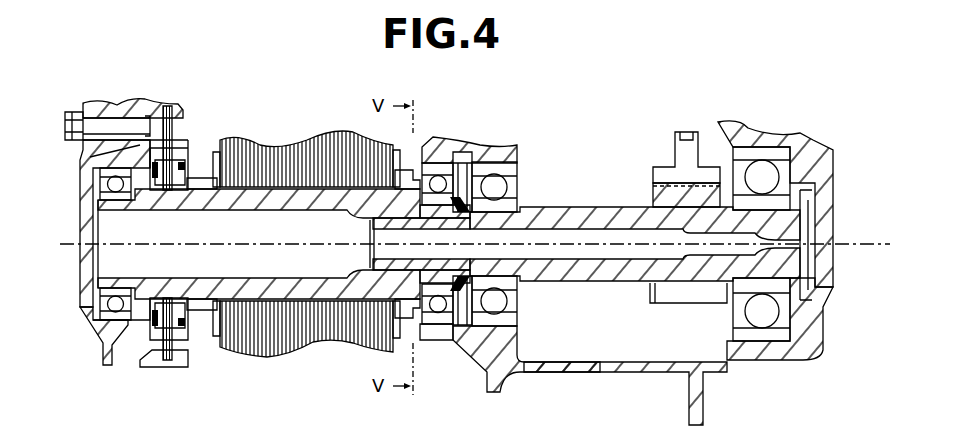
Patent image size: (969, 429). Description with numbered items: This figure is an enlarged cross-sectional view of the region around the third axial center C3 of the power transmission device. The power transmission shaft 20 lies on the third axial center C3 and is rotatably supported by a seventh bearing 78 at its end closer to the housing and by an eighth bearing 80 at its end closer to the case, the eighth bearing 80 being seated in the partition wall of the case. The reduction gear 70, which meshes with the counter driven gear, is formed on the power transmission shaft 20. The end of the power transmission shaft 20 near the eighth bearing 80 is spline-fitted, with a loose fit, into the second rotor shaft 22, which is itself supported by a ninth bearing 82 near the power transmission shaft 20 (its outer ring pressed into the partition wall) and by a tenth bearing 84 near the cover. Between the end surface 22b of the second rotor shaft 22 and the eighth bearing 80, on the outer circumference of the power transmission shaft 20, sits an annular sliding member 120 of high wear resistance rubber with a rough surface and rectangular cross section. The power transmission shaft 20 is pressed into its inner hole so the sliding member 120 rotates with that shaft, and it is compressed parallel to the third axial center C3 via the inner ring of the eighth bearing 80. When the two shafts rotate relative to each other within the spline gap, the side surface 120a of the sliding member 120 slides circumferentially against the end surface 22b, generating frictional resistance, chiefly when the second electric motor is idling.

The power transmission shaft 20 is at (586, 278).
The second rotor shaft 22 is at (193, 204).
The end surface 22b is at (468, 264).
The reduction gear 70 is at (660, 300).
The seventh bearing 78 is at (766, 320).
The eighth bearing 80 is at (508, 302).
The ninth bearing 82 is at (437, 312).
The tenth bearing 84 is at (112, 312).
The sliding member 120 is at (455, 205).
The side surface 120a is at (449, 212).
The third axial center C3 is at (868, 243).